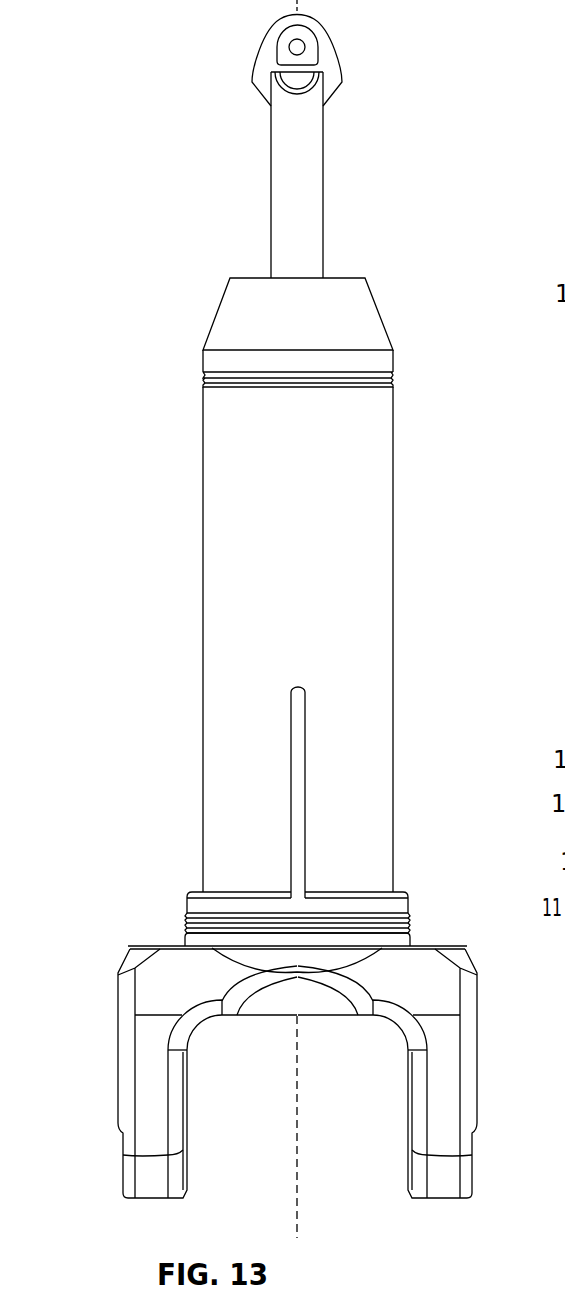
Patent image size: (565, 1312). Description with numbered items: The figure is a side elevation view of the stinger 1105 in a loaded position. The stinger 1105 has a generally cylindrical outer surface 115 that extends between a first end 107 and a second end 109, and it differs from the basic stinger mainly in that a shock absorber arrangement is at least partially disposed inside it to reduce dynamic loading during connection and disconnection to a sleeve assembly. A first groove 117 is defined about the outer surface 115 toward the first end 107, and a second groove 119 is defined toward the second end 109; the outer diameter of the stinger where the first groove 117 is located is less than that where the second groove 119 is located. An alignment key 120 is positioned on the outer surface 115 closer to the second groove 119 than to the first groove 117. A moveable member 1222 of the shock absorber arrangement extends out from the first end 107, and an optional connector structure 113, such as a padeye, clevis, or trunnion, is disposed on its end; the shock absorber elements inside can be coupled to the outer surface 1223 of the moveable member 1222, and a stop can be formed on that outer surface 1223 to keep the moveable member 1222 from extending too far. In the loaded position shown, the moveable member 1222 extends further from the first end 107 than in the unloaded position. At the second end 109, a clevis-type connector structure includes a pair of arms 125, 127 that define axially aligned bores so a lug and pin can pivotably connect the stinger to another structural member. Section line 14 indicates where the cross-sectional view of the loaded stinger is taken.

The stinger 1105 is at (149, 36).
The connector structure 113 is at (327, 38).
The moveable member 1222 is at (346, 146).
The outer surface of the moveable member 1223 is at (324, 202).
The first end 107 is at (249, 278).
The first groove 117 is at (194, 381).
The outer surface 115 is at (202, 562).
The alignment key 120 is at (306, 778).
The second groove 119 is at (181, 912).
The second end 109 is at (183, 944).
The arm 127 is at (118, 1060).
The arm 125 is at (477, 1060).
The line 14- 14 is at (304, 1238).